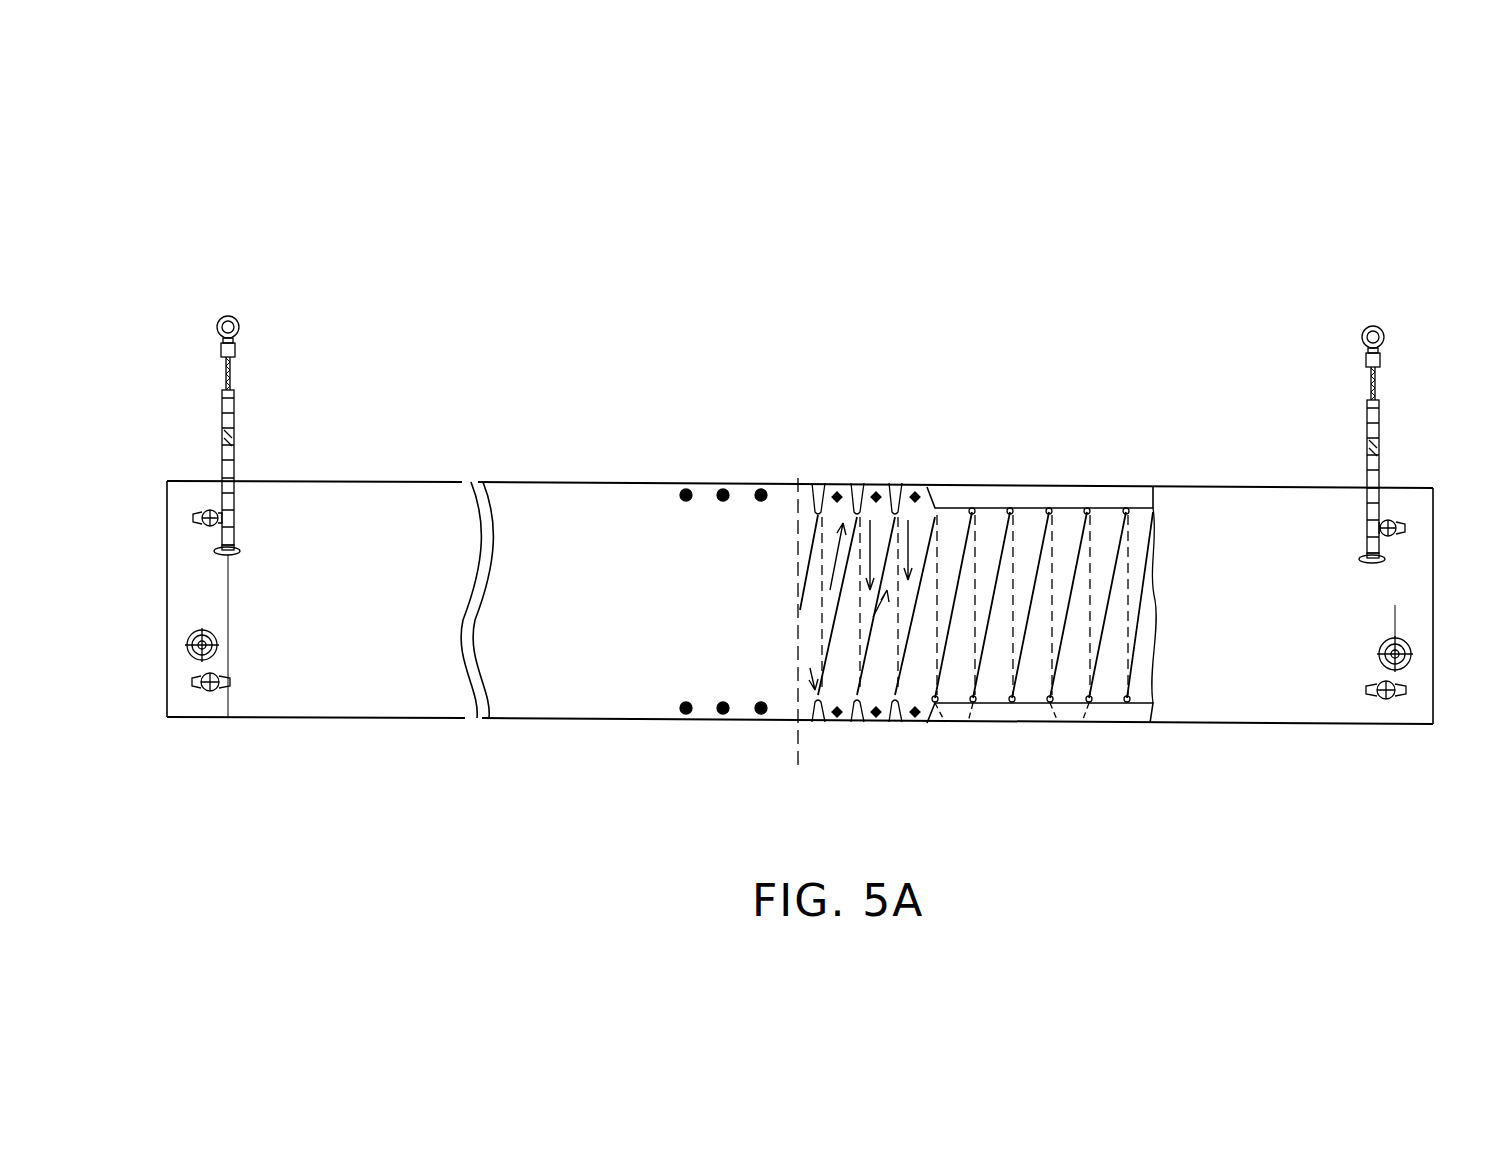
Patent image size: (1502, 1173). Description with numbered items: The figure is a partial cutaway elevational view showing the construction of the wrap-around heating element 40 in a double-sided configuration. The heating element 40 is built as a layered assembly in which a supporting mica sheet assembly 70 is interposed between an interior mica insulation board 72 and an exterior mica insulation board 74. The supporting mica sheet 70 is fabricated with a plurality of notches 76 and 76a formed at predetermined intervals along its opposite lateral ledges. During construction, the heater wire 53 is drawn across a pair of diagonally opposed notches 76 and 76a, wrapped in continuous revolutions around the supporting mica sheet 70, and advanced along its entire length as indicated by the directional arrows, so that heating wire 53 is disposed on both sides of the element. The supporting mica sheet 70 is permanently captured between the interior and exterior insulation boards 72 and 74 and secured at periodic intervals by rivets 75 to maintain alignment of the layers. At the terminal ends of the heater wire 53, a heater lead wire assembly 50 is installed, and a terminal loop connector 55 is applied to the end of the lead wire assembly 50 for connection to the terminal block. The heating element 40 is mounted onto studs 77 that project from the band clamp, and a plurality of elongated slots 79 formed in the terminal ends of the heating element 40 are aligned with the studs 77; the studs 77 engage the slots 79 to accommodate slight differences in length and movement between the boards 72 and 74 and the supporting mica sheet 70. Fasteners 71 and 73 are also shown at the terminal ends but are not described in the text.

The wrap-around heating element 40 is at (908, 275).
The heater lead wire assembly 50 is at (229, 438).
The terminal loop connector 55 is at (1384, 337).
The heater wire 53 is at (1048, 533).
The supporting mica sheet assembly 70 is at (1140, 552).
The right fastener nut 71 is at (1388, 520).
The interior mica insulation board 72 is at (943, 497).
The pivot bolt 73 is at (209, 626).
The exterior mica insulation board 74 is at (726, 552).
The rivets 75 is at (685, 487).
The notches 76 is at (975, 510).
The notches 76a is at (960, 722).
The studs 77 is at (222, 670).
The elongated slots 79 is at (228, 688).